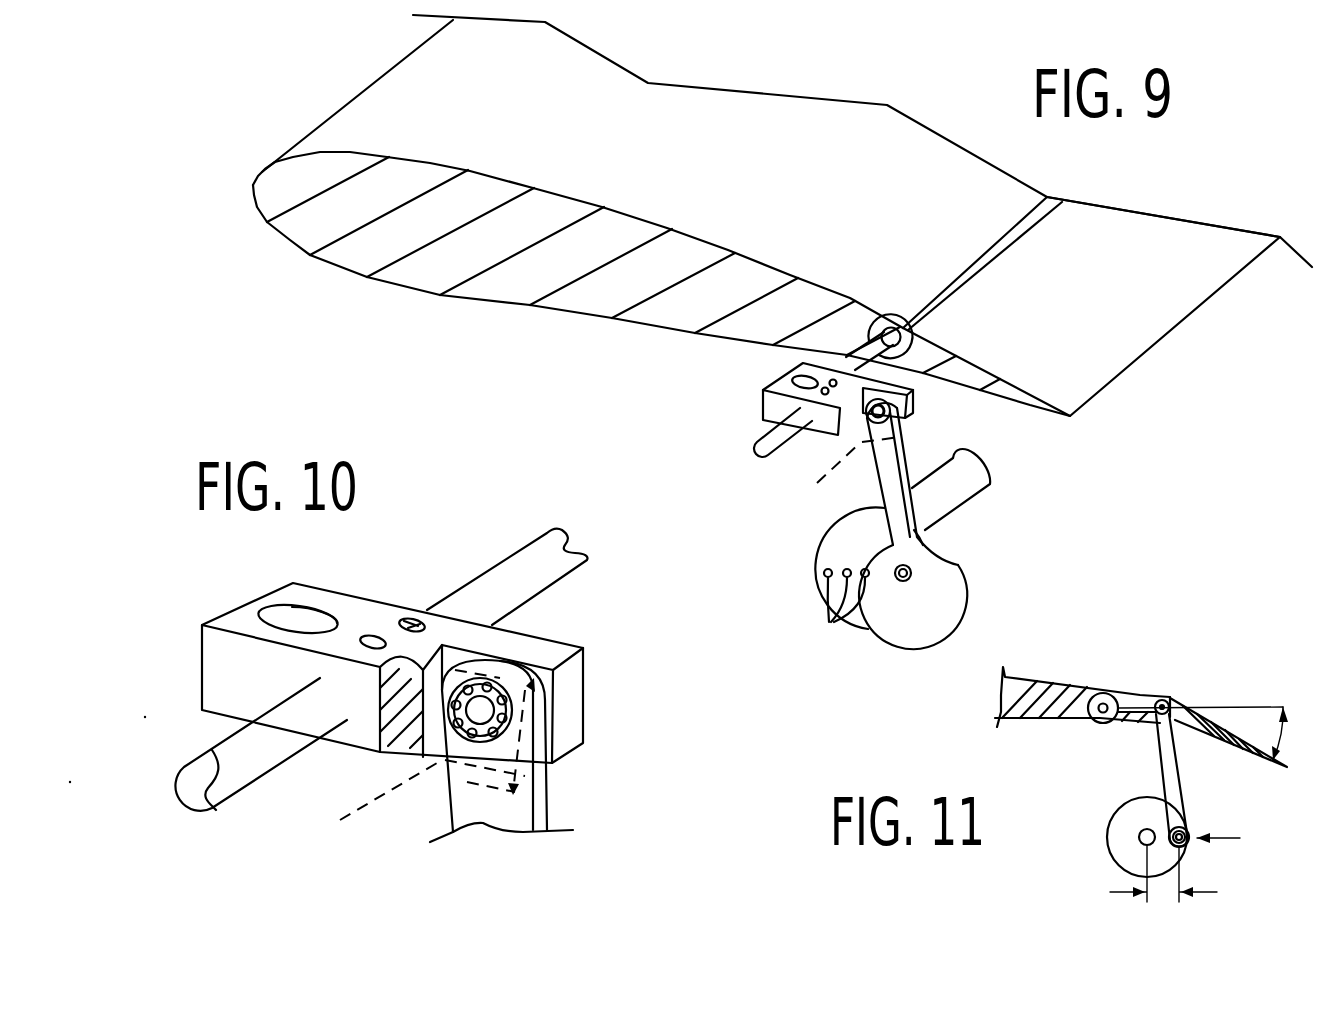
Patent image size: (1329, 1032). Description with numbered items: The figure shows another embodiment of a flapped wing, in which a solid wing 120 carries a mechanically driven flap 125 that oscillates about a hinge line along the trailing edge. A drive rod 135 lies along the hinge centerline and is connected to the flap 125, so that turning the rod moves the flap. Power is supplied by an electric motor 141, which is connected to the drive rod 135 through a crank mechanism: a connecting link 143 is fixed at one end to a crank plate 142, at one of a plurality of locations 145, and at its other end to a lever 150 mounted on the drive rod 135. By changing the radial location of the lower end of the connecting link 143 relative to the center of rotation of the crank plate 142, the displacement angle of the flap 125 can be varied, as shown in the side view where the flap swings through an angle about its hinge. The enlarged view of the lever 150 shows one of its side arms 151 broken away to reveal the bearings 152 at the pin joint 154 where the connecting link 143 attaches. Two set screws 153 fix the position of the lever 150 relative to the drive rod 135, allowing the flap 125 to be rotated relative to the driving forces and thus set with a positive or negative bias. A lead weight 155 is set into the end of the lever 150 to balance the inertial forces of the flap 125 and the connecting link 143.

In FIG. 9, the solid wing 120 is at (598, 144).
In FIG. 11, the solid wing 120 is at (1038, 678).
In FIG. 9, the flap 125 is at (1103, 317).
In FIG. 11, the flap 125 is at (1202, 735).
In FIG. 9, the drive rod 135 is at (760, 433).
In FIG. 10, the drive rod 135 is at (545, 590).
In FIG. 9, the electric motor 141 is at (988, 488).
In FIG. 9, the crank plate 142 is at (817, 540).
In FIG. 11, the crank plate 142 is at (1108, 850).
In FIG. 9, the connecting link 143 is at (960, 577).
In FIG. 11, the connecting link 143 is at (1158, 772).
In FIG. 9, the locations 145 is at (830, 622).
In FIG. 9, the lever 150 is at (777, 378).
In FIG. 10, the lever 150 is at (354, 582).
In FIG. 9, the side arms 151 is at (913, 405).
In FIG. 10, the side arms 151 is at (585, 710).
In FIG. 10, the bearings 152 is at (548, 807).
In FIG. 10, the set screws 153 is at (374, 638).
In FIG. 10, the pin joint 154 is at (477, 717).
In FIG. 10, the lead weight 155 is at (280, 607).